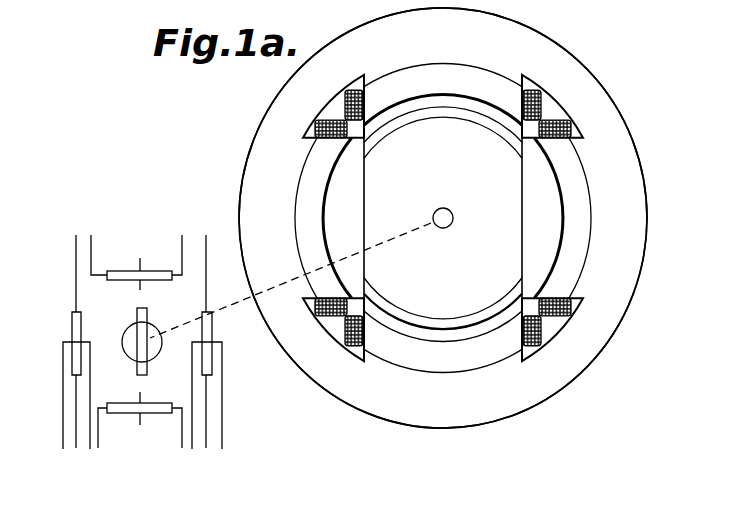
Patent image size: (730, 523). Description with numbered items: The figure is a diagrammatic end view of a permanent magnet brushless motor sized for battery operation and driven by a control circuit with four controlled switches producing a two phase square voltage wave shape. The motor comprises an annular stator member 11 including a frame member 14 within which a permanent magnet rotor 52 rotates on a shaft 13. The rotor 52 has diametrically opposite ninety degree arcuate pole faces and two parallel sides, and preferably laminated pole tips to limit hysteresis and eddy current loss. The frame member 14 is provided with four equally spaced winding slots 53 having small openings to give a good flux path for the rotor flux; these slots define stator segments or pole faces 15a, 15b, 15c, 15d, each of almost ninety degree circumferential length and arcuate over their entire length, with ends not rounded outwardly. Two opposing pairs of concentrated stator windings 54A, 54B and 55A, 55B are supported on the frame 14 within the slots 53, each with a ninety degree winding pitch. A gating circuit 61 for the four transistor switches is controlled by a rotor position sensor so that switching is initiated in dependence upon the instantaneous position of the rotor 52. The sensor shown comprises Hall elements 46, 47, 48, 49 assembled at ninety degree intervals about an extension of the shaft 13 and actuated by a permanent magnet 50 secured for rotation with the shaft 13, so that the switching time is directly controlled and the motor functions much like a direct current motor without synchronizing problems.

The annular stator member 11 is at (443, 218).
The shaft 13 is at (452, 213).
The frame member 14 is at (443, 217).
The stator segment or pole face 15a is at (443, 113).
The stator segment or pole face 15b is at (340, 218).
The stator segment or pole face 15c is at (443, 326).
The stator segment or pole face 15d is at (545, 218).
The Hall element 46 is at (115, 271).
The Hall element 47 is at (212, 323).
The Hall element 48 is at (160, 414).
The Hall element 49 is at (72, 321).
The permanent magnet 50 is at (137, 318).
The permanent magnet rotor 52 is at (429, 218).
The winding slots 53 is at (443, 206).
The stator winding 54A is at (443, 72).
The stator winding 54B is at (443, 365).
The stator winding 55A is at (289, 218).
The stator winding 55B is at (595, 218).
The gating circuit 61 is at (144, 462).